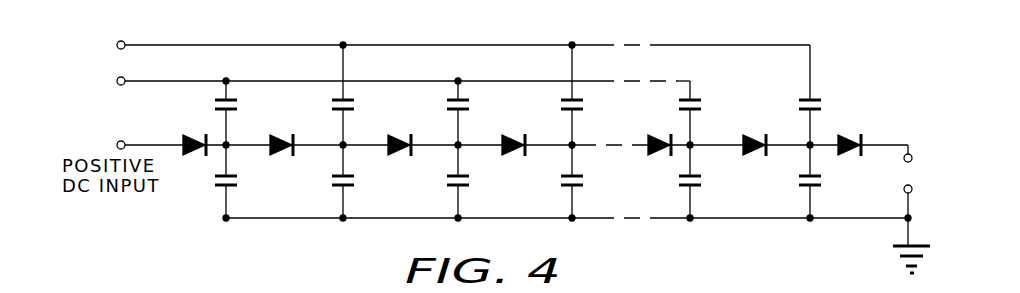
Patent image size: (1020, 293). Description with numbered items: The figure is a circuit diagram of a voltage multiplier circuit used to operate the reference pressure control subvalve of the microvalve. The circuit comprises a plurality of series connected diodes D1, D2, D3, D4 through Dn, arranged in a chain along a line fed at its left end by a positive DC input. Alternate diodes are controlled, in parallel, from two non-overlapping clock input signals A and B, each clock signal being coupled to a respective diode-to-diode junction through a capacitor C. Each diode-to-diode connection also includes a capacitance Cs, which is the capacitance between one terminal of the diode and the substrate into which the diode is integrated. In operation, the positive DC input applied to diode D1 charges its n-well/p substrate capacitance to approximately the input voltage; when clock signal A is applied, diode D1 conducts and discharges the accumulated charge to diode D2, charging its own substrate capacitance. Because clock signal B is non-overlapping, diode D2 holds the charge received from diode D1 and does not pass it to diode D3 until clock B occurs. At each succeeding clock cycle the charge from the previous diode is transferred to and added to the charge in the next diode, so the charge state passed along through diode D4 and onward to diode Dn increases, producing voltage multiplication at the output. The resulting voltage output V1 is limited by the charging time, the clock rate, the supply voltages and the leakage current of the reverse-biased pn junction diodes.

The clock input signal A is at (452, 38).
The clock input signal B is at (392, 76).
The capacitor C is at (526, 95).
The capacitance Cs is at (533, 181).
The diode D1 is at (195, 132).
The diode D2 is at (282, 132).
The diode D3 is at (401, 132).
The diode D4 is at (515, 132).
The diode Dn is at (857, 129).
The voltage output V1 is at (862, 37).